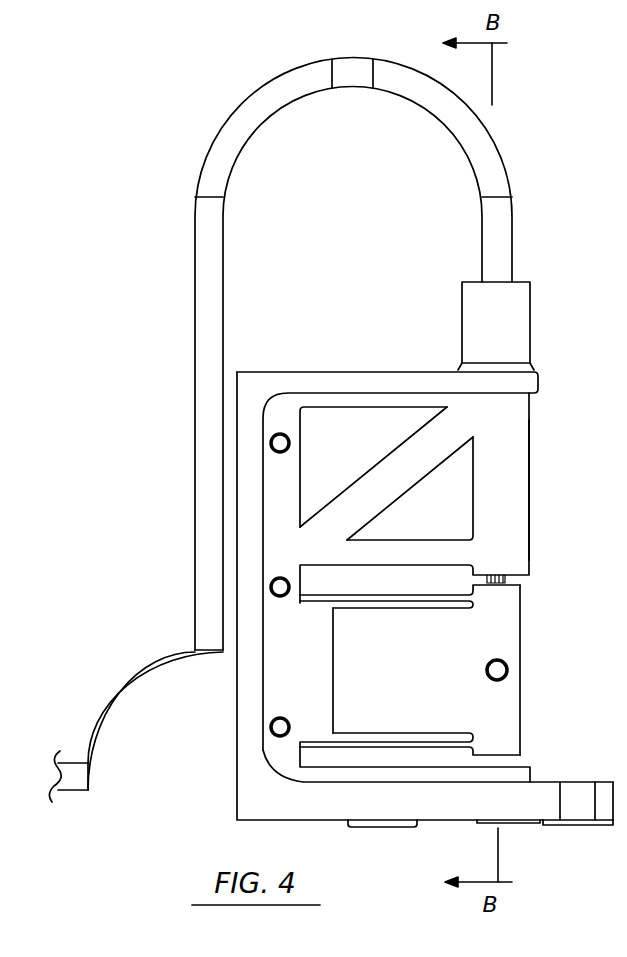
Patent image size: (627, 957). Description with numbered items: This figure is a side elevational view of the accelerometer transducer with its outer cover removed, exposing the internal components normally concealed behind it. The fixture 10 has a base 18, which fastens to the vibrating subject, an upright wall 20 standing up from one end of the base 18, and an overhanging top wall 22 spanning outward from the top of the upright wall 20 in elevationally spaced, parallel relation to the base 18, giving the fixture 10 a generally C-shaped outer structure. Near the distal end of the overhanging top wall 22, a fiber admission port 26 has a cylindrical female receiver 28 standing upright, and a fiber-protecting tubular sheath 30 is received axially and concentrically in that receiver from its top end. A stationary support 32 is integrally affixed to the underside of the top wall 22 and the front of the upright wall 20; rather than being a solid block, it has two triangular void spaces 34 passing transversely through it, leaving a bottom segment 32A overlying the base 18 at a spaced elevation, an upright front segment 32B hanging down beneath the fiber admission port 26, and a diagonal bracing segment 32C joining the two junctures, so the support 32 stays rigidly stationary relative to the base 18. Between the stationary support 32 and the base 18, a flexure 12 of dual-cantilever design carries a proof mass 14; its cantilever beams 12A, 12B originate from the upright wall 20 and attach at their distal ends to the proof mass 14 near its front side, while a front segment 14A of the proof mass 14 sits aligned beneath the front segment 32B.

The fixture 10 is at (278, 371).
The flexure 12 is at (346, 671).
The cantilever beam 12A is at (323, 744).
The cantilever beam 12B is at (322, 598).
The proof mass 14 is at (457, 670).
The front segment 14A is at (505, 697).
The base 18 is at (438, 810).
The upright wall 20 is at (240, 562).
The overhanging top wall 22 is at (338, 378).
The fiber admission port 26 is at (522, 304).
The cylindrical female receiver 28 is at (503, 313).
The fiber-protecting tubular sheath 30 is at (494, 162).
The stationary support 32 is at (446, 449).
The bottom segment 32A is at (432, 550).
The upright front segment 32B is at (518, 477).
The diagonal bracing segment 32C is at (380, 473).
The triangular void spaces 34 is at (367, 412).